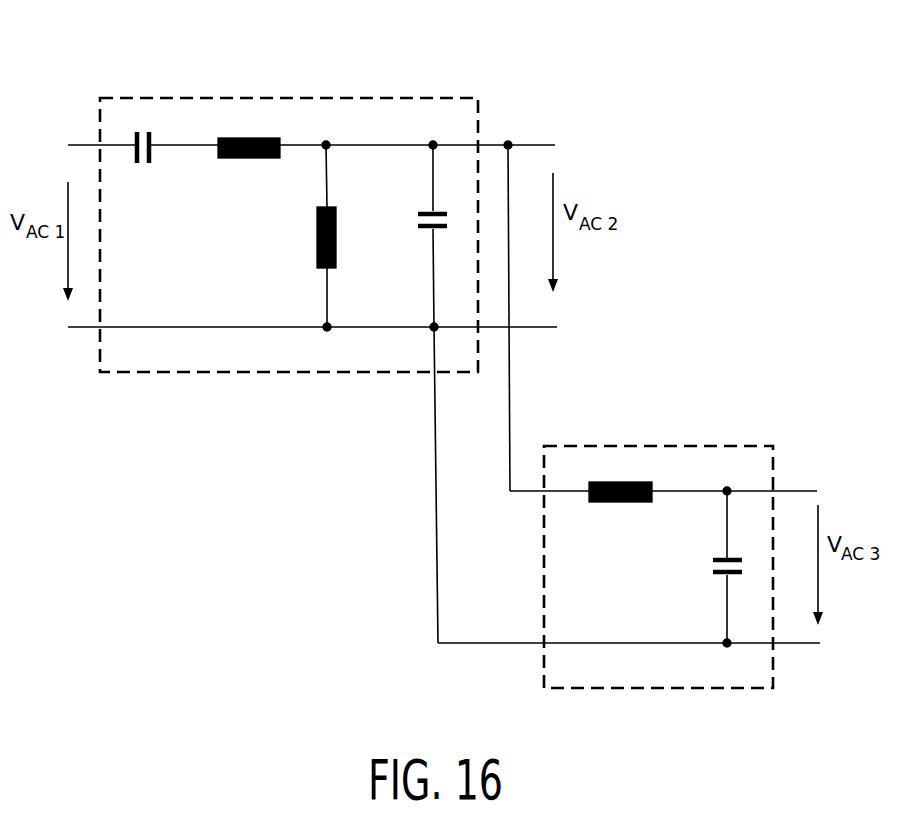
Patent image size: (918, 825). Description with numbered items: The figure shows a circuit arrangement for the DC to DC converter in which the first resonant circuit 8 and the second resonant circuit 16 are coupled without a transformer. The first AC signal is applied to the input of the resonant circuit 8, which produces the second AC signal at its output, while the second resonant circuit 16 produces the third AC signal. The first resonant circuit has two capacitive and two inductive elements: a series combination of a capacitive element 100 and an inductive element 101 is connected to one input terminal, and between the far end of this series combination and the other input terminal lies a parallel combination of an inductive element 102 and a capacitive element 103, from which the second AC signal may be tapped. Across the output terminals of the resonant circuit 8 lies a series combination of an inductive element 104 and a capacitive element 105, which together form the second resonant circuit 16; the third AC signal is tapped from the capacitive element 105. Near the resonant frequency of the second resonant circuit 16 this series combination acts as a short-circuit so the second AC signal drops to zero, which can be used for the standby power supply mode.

The first resonant circuit 8 is at (363, 98).
The second resonant circuit 16 is at (690, 444).
The capacitive element 100 is at (141, 164).
The inductive element 101 is at (246, 159).
The inductive element 102 is at (317, 250).
The capacitive element 103 is at (418, 223).
The inductive element 104 is at (618, 503).
The capacitive element 105 is at (713, 566).